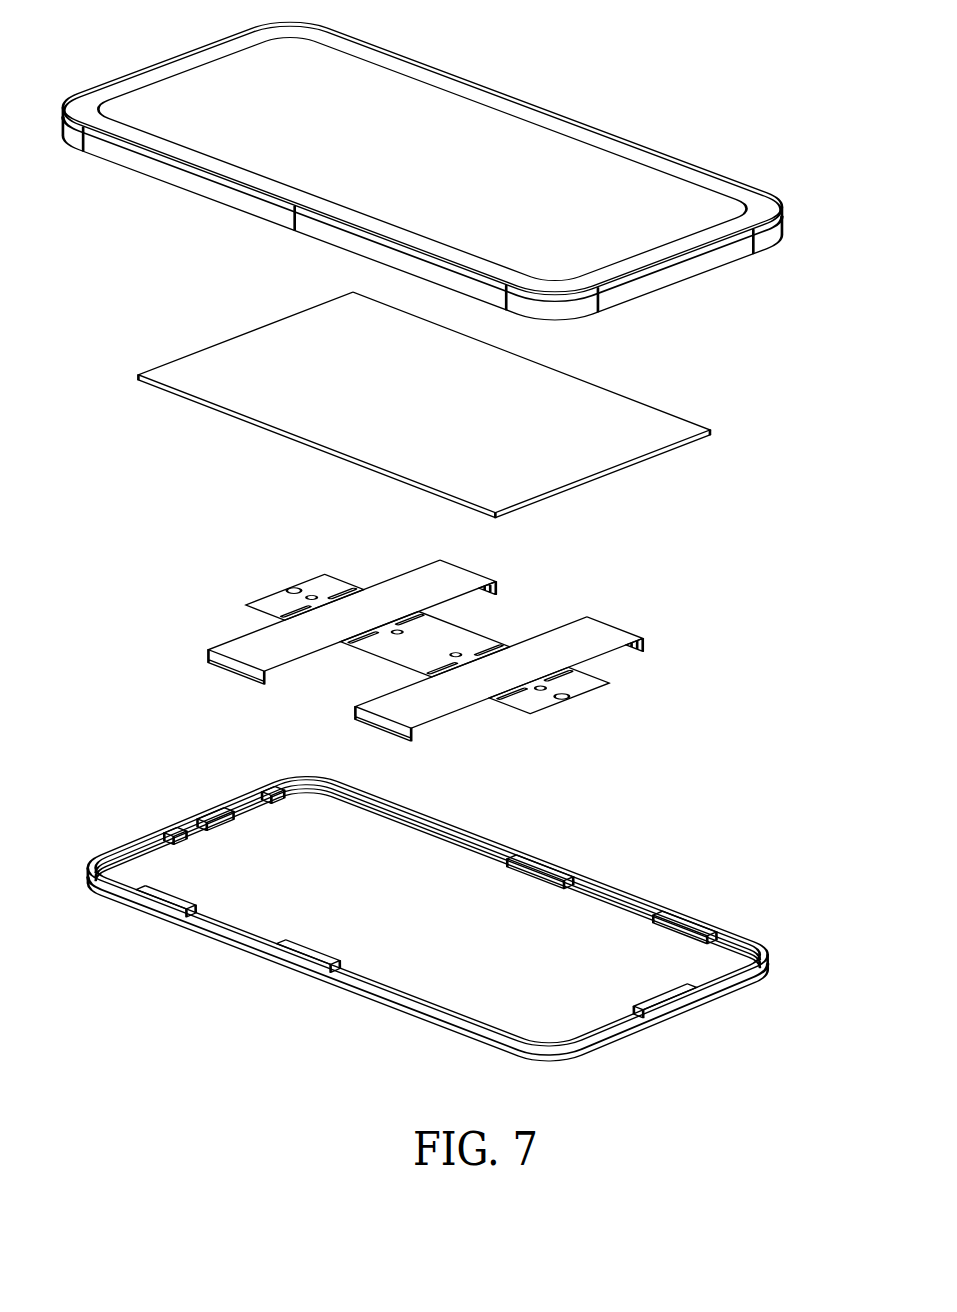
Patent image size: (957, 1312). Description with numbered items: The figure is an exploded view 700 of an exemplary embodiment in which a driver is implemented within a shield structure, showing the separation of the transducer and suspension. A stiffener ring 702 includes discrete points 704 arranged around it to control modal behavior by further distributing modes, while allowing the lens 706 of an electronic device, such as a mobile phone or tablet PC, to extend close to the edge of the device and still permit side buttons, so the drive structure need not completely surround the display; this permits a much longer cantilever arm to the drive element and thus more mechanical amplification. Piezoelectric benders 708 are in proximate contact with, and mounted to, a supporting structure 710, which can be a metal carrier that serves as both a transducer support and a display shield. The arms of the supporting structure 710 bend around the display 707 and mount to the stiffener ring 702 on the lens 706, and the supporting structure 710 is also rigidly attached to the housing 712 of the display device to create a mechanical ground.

The exploded view 700 is at (817, 125).
The stiffener ring 702 is at (620, 885).
The discrete points 704 is at (207, 820).
The lens 706 is at (402, 917).
The display 707 is at (667, 413).
The piezoelectric benders 708 is at (438, 655).
The supporting structure 710 is at (287, 586).
The housing 712 is at (710, 172).